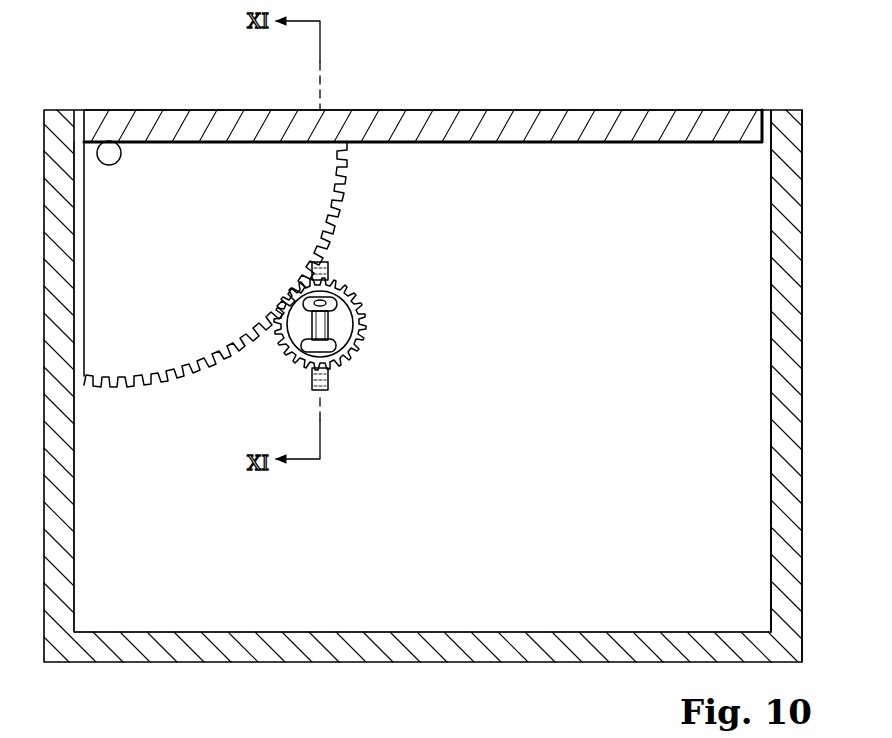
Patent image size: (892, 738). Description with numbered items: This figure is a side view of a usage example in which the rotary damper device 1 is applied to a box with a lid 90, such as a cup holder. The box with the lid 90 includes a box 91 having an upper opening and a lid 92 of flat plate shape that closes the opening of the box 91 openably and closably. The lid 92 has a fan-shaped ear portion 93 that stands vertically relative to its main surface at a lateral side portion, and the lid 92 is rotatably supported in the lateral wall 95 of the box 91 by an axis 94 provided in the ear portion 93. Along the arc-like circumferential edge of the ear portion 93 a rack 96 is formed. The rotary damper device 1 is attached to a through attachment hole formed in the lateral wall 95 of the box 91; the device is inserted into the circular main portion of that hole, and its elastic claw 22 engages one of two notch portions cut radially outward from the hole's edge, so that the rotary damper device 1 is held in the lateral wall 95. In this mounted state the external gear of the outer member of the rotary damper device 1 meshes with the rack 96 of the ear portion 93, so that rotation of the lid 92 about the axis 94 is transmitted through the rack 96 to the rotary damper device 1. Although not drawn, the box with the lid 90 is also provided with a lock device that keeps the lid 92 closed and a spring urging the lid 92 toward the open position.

The rotary damper device 1 is at (373, 283).
The elastic claw 22 is at (329, 272).
The box with a lid 90 is at (668, 106).
The box 91 is at (803, 216).
The lid 92 is at (598, 122).
The ear portion 93 is at (215, 245).
The axis 94 is at (108, 140).
The lateral wall 95 is at (473, 165).
The rack 96 is at (145, 382).